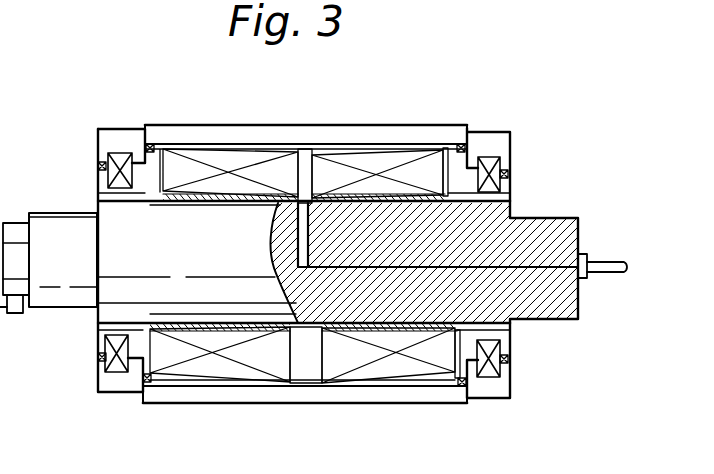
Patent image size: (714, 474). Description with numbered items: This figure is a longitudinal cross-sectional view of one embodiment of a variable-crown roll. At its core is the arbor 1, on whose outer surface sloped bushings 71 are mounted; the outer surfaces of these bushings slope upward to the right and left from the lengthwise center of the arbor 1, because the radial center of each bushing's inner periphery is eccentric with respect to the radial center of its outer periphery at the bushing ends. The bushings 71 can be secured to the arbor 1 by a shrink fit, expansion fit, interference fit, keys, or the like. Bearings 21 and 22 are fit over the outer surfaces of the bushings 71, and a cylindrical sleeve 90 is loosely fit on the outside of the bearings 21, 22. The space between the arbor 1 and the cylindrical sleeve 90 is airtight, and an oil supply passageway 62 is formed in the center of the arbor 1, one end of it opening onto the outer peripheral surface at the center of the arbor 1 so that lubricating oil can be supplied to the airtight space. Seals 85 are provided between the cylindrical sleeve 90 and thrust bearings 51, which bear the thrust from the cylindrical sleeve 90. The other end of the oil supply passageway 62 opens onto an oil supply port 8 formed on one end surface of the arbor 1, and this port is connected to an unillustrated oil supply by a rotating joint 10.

The arbor 1 is at (553, 232).
The oil supply port 8 is at (570, 275).
The rotating joint 10 is at (588, 257).
The bearing 21 is at (350, 177).
The bearing 22 is at (262, 163).
The thrust bearing 51 is at (101, 153).
The oil supply passageway 62 is at (318, 328).
The sloped bushing 71 is at (208, 194).
The seal 85 is at (152, 146).
The cylindrical sleeve 90 is at (396, 134).